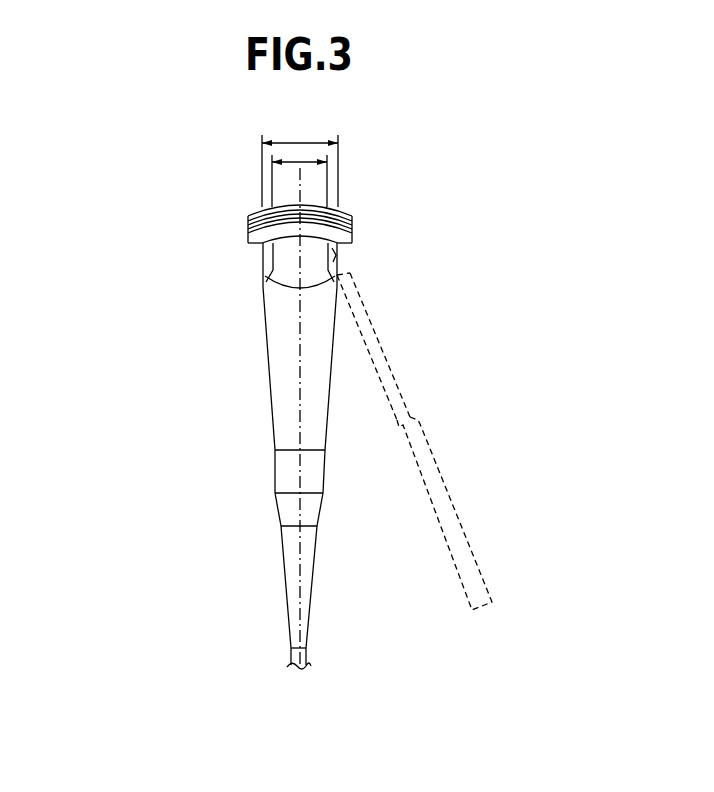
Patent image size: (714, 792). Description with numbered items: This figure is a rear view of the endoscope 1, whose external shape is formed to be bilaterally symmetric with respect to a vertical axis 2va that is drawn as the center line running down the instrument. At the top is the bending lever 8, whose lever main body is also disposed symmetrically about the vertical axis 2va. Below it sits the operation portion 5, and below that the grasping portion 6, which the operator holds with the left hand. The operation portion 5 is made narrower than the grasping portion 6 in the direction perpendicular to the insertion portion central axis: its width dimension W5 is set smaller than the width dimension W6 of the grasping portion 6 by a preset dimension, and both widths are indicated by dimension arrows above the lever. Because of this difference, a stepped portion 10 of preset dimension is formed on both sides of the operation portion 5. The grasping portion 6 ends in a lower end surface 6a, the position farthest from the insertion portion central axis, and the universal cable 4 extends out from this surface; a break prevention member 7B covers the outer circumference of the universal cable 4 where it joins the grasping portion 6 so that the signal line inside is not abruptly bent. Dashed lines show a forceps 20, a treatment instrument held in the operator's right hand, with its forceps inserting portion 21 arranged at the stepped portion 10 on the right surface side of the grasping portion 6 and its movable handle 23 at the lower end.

The endoscope 1 is at (255, 396).
The universal cable 4 is at (290, 662).
The operation portion 5 is at (288, 255).
The grasping portion 6 is at (277, 330).
The lower end surface 6a is at (293, 453).
The break prevention member 7B is at (270, 533).
The bending lever 8 is at (240, 211).
The stepped portion 10 is at (342, 270).
The forceps 20 is at (445, 447).
The forceps inserting portion 21 is at (353, 252).
The movable handle 23 is at (470, 537).
The vertical axis 2va is at (303, 183).
The width dimension of the grasping portion W6 is at (262, 143).
The width dimension of the operation portion W5 is at (272, 162).